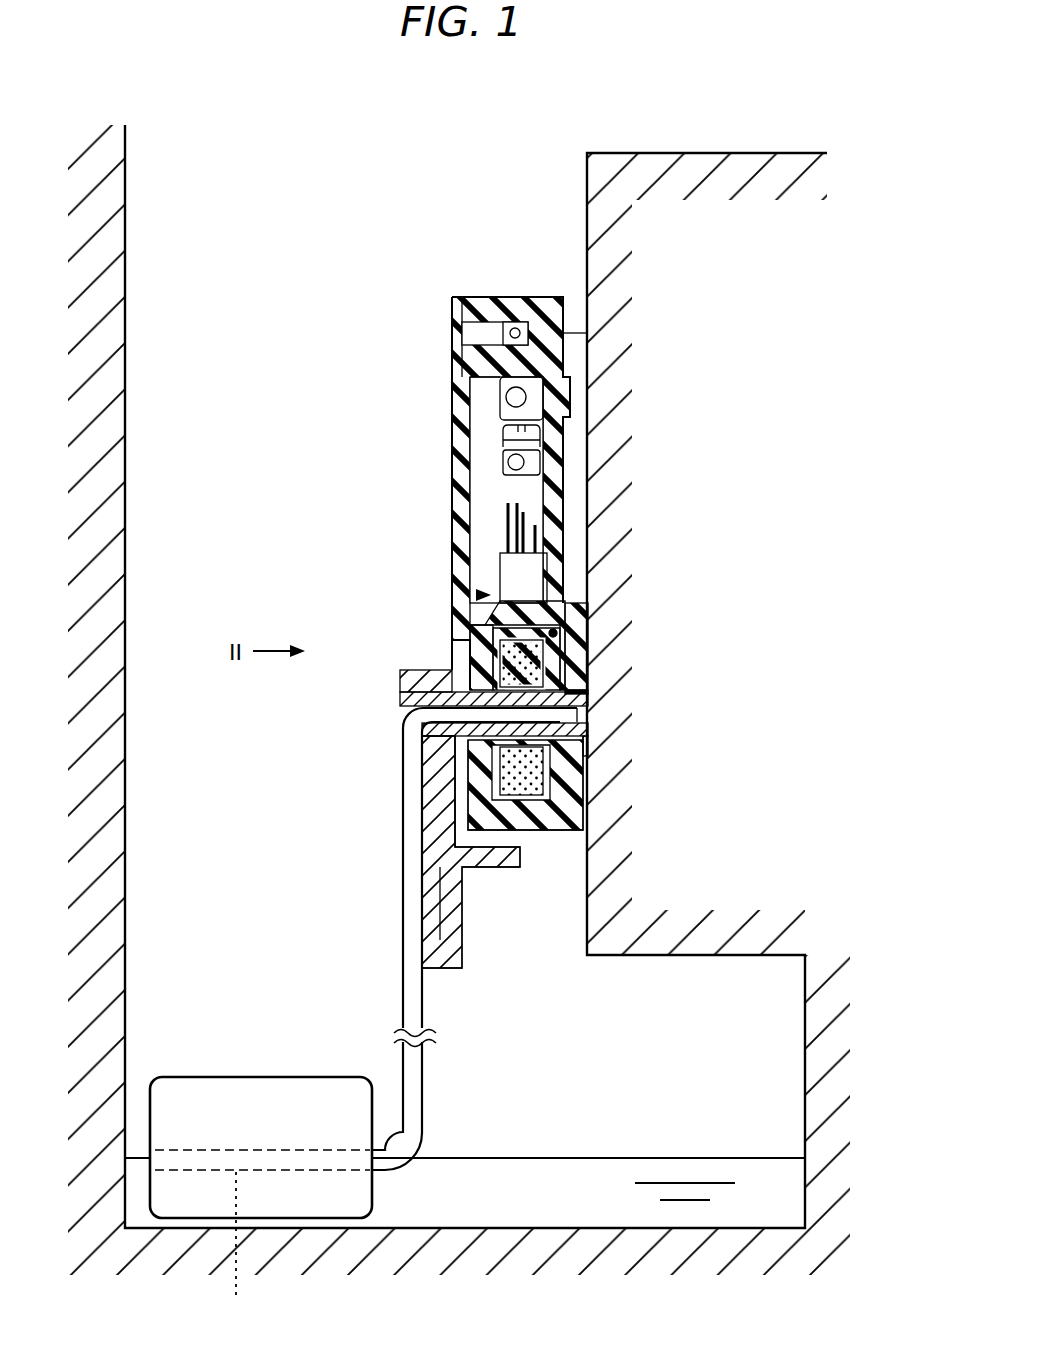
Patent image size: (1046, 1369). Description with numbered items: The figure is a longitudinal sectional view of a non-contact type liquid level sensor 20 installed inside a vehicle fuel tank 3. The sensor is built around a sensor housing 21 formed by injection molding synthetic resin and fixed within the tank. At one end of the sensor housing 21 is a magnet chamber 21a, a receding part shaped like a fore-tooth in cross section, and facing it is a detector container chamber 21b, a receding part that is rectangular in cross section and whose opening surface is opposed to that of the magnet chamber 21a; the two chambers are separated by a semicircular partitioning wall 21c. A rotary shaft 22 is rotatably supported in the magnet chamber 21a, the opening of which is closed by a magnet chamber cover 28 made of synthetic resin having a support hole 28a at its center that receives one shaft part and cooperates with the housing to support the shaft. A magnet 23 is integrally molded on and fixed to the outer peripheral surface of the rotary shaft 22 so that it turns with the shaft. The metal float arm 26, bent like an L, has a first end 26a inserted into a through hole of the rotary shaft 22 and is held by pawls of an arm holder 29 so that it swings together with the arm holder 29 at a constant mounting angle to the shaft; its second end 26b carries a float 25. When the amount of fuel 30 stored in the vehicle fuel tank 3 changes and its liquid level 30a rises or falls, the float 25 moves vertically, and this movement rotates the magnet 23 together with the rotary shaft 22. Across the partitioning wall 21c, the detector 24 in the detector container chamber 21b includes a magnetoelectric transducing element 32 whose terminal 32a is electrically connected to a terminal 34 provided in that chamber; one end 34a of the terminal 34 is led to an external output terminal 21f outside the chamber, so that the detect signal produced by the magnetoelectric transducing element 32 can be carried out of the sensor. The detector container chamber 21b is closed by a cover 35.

The vehicle fuel tank 3 is at (805, 1075).
The non-contact type liquid level sensor 20 is at (313, 298).
The sensor housing 21 is at (566, 441).
The magnet chamber 21a is at (570, 611).
The detector container chamber 21b is at (487, 401).
The partitioning wall 21c is at (476, 594).
The external output terminal 21f is at (482, 337).
The rotary shaft 22 is at (556, 718).
The magnet 23 is at (546, 830).
The detector 24 is at (487, 621).
The float 25 is at (233, 1089).
The float arm 26 is at (410, 991).
The first end 26a is at (576, 752).
The second end 26b is at (235, 1251).
The magnet chamber cover 28 is at (556, 633).
The support hole 28a is at (581, 691).
The arm holder 29 is at (444, 920).
The fuel 30 is at (548, 1154).
The liquid level 30a is at (625, 1158).
The magnetoelectric transducing element 32 is at (513, 568).
The terminal 32a is at (508, 531).
The terminal 34 is at (500, 393).
The one end 34a is at (515, 325).
The cover 35 is at (460, 452).